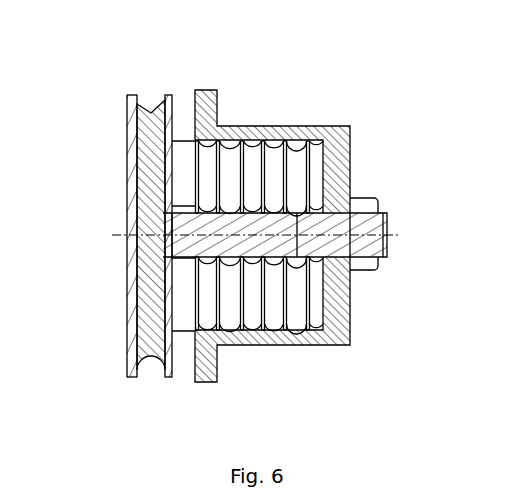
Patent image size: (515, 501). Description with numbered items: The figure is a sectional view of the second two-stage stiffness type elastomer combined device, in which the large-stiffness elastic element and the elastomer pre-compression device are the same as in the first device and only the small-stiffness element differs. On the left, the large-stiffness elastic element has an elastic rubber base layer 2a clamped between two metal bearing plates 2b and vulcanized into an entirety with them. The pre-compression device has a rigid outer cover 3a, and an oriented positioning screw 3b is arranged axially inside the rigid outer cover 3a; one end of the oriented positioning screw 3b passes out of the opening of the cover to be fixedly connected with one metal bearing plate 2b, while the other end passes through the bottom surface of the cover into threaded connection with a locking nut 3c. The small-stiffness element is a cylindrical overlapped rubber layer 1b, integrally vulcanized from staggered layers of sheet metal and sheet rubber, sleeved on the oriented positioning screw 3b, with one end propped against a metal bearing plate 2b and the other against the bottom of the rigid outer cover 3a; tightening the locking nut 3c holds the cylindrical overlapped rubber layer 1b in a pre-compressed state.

The cylindrical overlapped rubber layer 1b is at (228, 168).
The elastic rubber base layer 2a is at (128, 350).
The metal bearing plate 2b is at (163, 105).
The rigid outer cover 3a is at (348, 307).
The oriented positioning screw 3b is at (387, 222).
The locking nut 3c is at (368, 265).